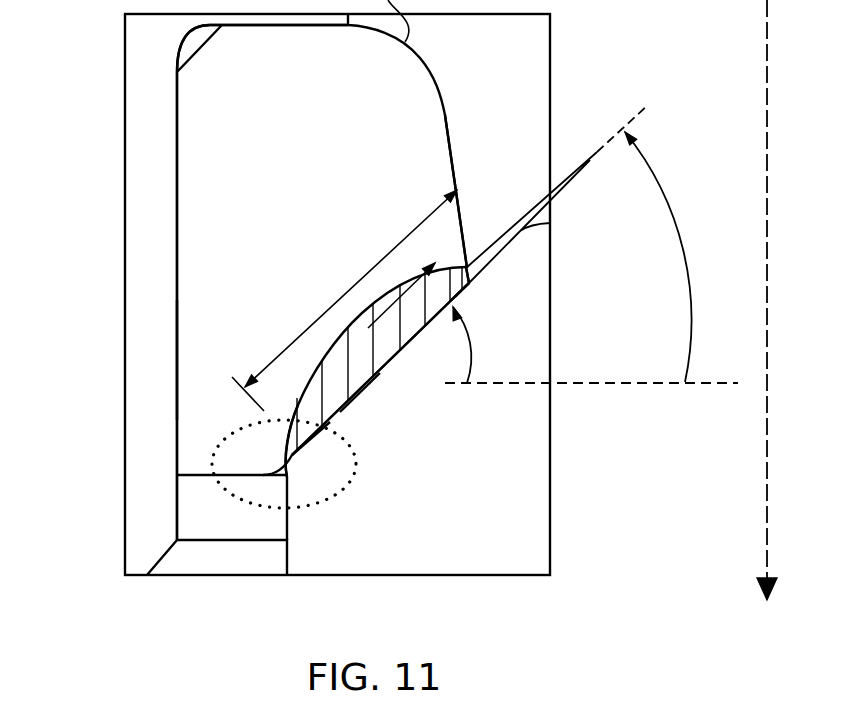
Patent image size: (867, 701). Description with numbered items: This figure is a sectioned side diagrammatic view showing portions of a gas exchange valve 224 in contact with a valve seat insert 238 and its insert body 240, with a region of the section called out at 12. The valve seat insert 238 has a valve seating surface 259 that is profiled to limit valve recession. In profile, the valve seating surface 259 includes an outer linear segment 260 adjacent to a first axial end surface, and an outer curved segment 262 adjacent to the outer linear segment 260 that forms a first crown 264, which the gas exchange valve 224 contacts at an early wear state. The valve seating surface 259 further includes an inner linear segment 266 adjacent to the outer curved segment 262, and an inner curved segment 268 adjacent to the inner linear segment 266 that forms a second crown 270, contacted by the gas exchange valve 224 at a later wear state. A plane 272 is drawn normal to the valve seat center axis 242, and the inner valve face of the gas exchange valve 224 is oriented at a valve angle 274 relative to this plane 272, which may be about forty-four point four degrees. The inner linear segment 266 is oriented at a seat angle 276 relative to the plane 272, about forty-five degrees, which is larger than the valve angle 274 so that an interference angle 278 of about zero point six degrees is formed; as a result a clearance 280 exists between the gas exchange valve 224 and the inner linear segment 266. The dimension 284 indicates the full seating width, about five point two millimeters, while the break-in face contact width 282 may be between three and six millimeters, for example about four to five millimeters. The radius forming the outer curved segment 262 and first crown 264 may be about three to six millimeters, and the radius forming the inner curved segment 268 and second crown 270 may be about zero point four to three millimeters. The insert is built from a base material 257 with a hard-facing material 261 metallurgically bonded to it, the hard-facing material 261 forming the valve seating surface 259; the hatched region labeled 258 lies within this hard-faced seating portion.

The cross-sectional detail region 12 is at (213, 470).
The gas exchange valve 224 is at (527, 562).
The valve seat insert 238 is at (197, 307).
The insert body 240 is at (262, 282).
The valve seat center axis 242 is at (768, 297).
The base material 257 is at (208, 356).
The vane 258 is at (302, 373).
The valve seating surface 259 is at (357, 404).
The outer linear segment 260 is at (280, 472).
The hard-facing material 261 is at (393, 293).
The outer curved segment 262 is at (302, 455).
The first crown 264 is at (313, 443).
The inner linear segment 266 is at (403, 350).
The inner curved segment 268 is at (470, 263).
The second crown 270 is at (472, 287).
The plane 272 is at (637, 387).
The valve angle 274 is at (693, 250).
The seat angle 276 is at (470, 343).
The interference angle 278 is at (592, 170).
The clearance 280 is at (465, 275).
The break-in face contact width 282 is at (310, 380).
The full seating width dimension 284 is at (290, 350).